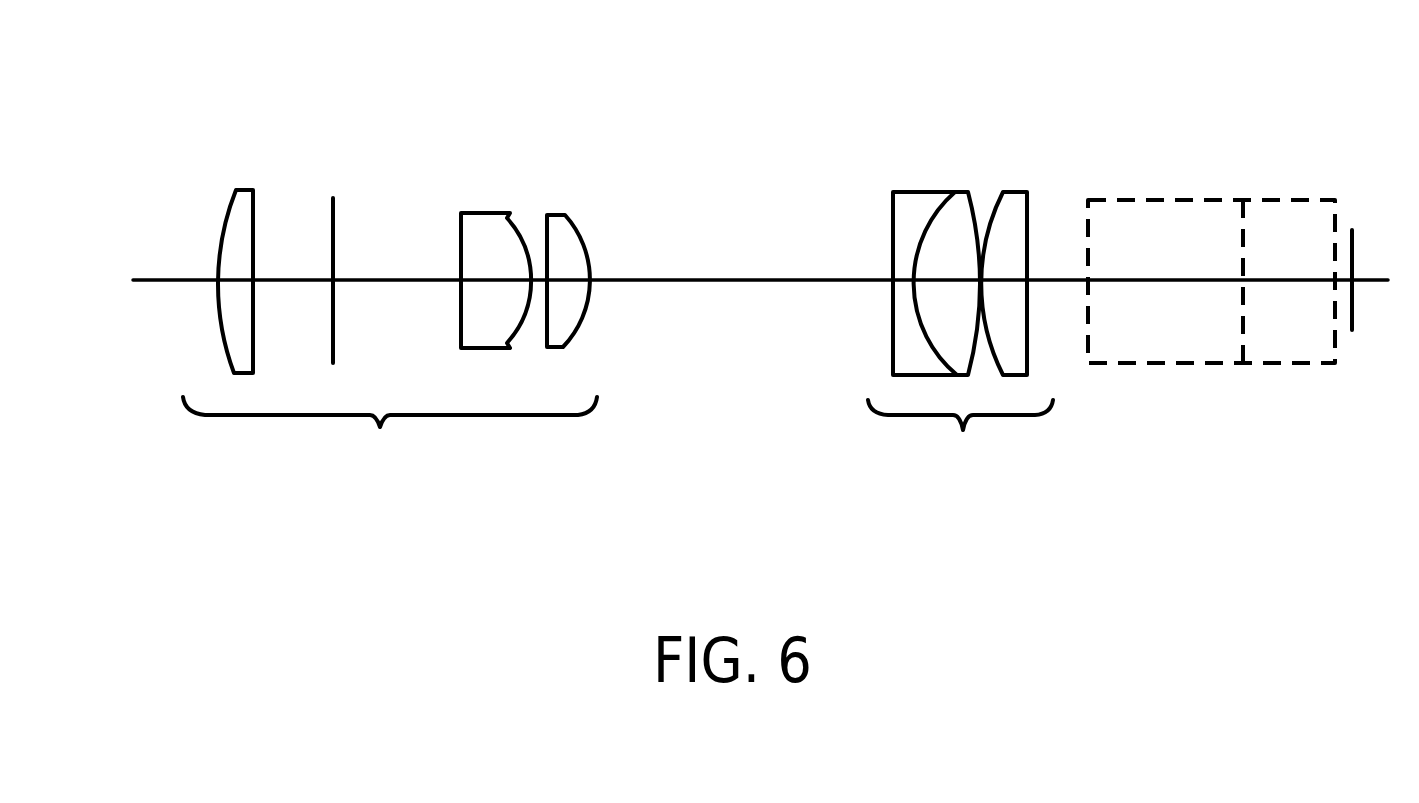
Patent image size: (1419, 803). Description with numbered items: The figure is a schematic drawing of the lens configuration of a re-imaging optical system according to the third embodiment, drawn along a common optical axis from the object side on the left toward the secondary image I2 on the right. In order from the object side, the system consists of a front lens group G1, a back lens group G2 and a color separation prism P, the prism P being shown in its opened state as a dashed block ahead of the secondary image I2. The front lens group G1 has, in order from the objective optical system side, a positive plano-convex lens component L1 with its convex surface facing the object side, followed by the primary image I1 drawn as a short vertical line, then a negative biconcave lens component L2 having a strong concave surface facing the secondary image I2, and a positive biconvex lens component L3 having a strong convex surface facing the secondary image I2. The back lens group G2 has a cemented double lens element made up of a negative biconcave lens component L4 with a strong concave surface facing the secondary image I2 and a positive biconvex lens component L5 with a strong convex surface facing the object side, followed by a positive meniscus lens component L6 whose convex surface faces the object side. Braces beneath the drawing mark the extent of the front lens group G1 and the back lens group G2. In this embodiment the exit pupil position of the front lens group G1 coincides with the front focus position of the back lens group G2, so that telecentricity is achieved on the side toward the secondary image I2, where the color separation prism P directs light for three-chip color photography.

The positive plano-convex lens component L1 is at (245, 187).
The primary image I1 is at (333, 198).
The negative biconcave lens component L2 is at (488, 213).
The positive biconvex lens component L3 is at (557, 215).
The negative biconcave lens component L4 is at (912, 192).
The positive biconvex lens component L5 is at (960, 191).
The positive meniscus lens component L6 is at (1020, 191).
The color separation prism P is at (1177, 200).
The secondary image I2 is at (1355, 230).
The front lens group G1 is at (390, 450).
The back lens group G2 is at (960, 452).